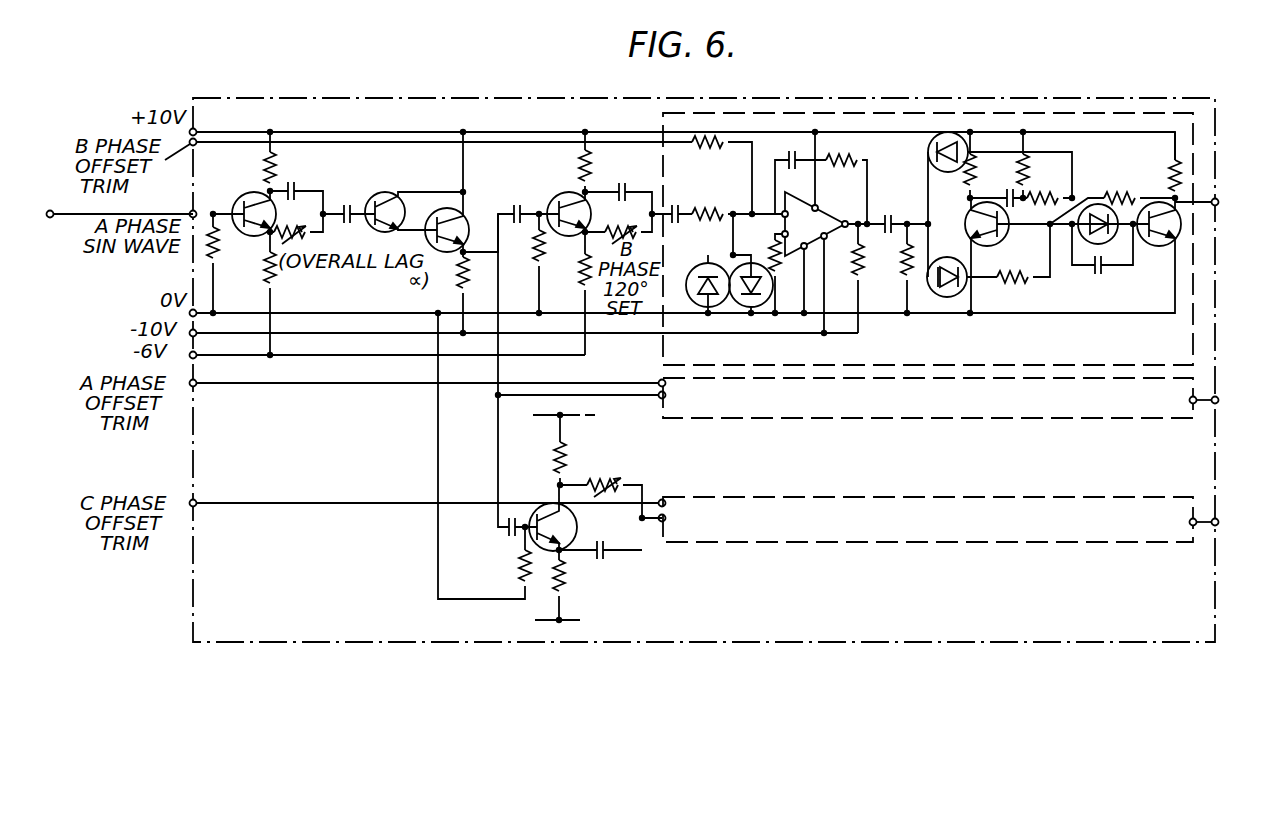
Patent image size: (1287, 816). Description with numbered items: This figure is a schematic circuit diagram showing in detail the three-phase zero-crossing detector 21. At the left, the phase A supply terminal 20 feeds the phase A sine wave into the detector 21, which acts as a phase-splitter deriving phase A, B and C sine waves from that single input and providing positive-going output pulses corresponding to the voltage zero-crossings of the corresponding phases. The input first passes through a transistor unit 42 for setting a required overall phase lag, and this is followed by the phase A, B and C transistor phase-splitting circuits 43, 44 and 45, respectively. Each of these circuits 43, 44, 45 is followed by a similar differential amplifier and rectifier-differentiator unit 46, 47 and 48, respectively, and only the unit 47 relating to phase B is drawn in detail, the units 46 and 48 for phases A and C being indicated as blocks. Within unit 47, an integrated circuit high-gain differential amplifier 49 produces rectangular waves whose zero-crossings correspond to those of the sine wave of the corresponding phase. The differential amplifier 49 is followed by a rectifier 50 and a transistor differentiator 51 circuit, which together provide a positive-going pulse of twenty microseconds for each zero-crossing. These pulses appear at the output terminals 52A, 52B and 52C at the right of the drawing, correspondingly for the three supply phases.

The phase A supply terminal 20 is at (118, 219).
The three-phase zero-crossing detector 21 is at (1142, 99).
The transistor unit 42 is at (236, 195).
The phase A transistor phase-splitting circuit 43 is at (432, 232).
The phase B transistor phase-splitting circuit 44 is at (560, 197).
The phase C transistor phase-splitting circuit 45 is at (540, 503).
The differential amplifier and rectifier-differentiator unit 46 is at (1117, 422).
The differential amplifier and rectifier-differentiator unit 47 is at (1057, 111).
The differential amplifier and rectifier-differentiator unit 48 is at (1120, 496).
The integrated circuit high-gain differential amplifier 49 is at (832, 210).
The rectifier 50 is at (928, 152).
The transistor differentiator circuit 51 is at (1003, 240).
The output terminal 52A is at (1229, 394).
The output terminal 52B is at (1223, 206).
The output terminal 52C is at (1229, 516).